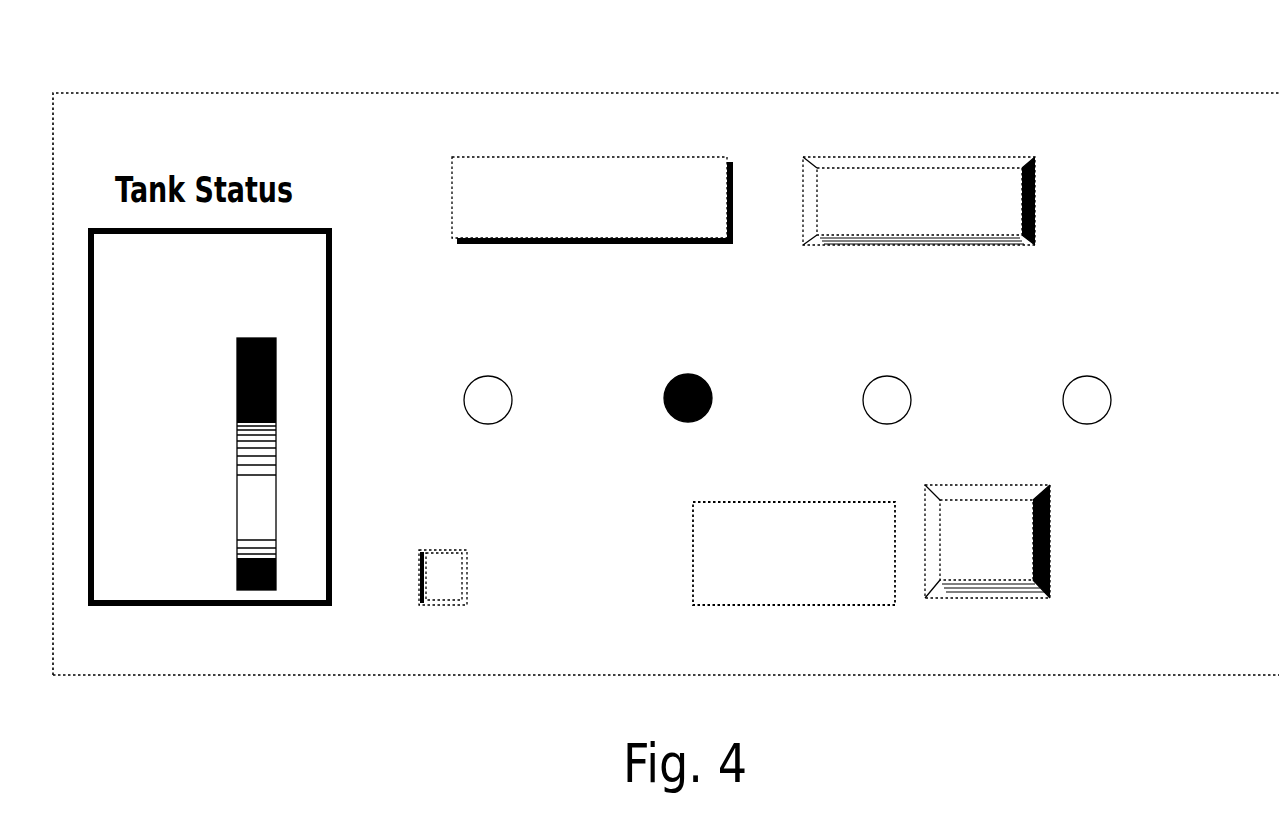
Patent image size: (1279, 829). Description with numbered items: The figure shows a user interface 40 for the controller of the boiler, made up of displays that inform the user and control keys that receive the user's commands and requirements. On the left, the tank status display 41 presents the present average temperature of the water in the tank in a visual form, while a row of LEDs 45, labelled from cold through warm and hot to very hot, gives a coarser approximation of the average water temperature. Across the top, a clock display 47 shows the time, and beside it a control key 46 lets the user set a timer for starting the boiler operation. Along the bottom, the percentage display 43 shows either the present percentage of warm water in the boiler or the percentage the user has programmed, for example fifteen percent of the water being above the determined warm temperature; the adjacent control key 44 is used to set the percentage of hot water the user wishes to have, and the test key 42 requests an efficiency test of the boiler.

The user interface 40 is at (175, 93).
The tank status display 41 is at (208, 600).
The test key 42 is at (445, 603).
The percentage display 43 is at (823, 605).
The control key 44 is at (1008, 573).
The LEDs 45 is at (480, 423).
The control key 46 is at (908, 155).
The clock display 47 is at (597, 155).